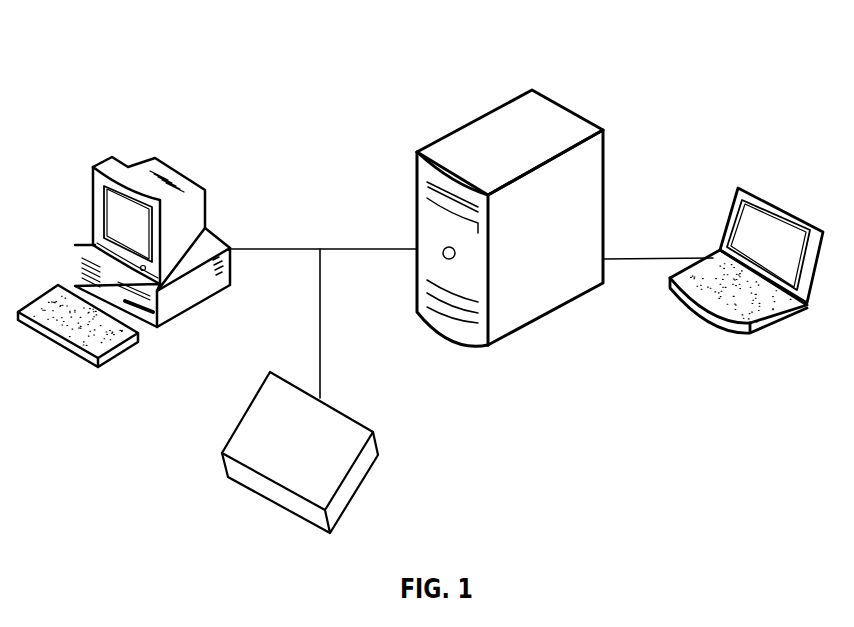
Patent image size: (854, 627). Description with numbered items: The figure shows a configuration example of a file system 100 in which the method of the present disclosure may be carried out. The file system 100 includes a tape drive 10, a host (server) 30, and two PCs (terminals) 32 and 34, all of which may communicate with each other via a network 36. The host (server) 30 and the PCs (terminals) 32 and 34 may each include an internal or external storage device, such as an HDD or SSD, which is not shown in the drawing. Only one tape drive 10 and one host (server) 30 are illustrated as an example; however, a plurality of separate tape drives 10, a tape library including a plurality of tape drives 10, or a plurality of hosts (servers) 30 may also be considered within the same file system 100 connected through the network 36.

The file system 100 is at (402, 46).
The tape drive 10 is at (317, 450).
The host (server) 30 is at (585, 117).
The PC (terminal) 32 is at (173, 172).
The PC (terminal) 34 is at (783, 212).
The network 36 is at (322, 345).